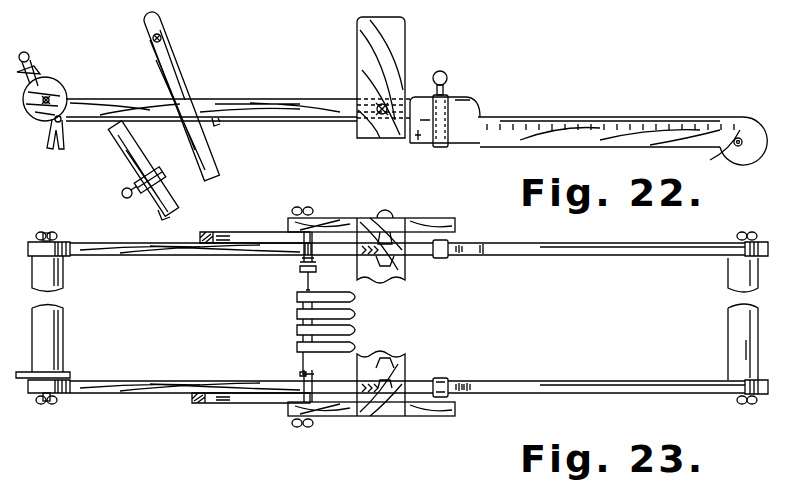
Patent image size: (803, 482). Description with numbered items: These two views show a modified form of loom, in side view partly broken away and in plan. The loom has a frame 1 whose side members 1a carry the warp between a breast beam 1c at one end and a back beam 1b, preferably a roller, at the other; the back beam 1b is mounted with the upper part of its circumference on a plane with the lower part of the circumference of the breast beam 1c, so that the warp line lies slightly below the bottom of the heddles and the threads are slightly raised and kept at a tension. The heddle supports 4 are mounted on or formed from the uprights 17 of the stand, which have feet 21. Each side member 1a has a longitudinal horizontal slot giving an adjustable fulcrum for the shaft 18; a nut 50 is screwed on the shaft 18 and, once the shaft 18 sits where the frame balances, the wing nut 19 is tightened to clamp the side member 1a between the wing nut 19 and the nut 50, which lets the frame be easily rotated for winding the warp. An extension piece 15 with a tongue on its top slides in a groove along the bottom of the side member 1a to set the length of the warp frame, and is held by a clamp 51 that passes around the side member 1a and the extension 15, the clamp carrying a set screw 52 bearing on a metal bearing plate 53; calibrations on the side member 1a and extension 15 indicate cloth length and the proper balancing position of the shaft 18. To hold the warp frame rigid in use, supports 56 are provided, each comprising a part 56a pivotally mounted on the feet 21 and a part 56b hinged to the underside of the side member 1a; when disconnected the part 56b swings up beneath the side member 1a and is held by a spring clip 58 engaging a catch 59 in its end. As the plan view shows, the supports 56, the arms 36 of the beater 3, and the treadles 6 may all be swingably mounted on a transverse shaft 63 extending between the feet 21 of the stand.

In FIG. 22, the frame 1 is at (247, 98).
In FIG. 22, the side member 1a is at (486, 112).
In FIG. 23, the side member 1a is at (472, 244).
In FIG. 23, the back beam 1b is at (732, 342).
In FIG. 22, the breast beam 1c is at (60, 88).
In FIG. 22, the beater 3 is at (160, 25).
In FIG. 22, the heddle support 4 is at (407, 56).
In FIG. 23, the heddle support 4 is at (404, 220).
In FIG. 23, the treadle 6 is at (356, 344).
In FIG. 22, the extension piece 15 is at (606, 128).
In FIG. 23, the extension piece 15 is at (596, 256).
In FIG. 22, the upright 17 is at (365, 136).
In FIG. 22, the shaft 18 is at (360, 98).
In FIG. 23, the shaft 18 is at (386, 216).
In FIG. 22, the wing nut 19 is at (384, 136).
In FIG. 23, the wing nut 19 is at (388, 350).
In FIG. 23, the foot 21 is at (324, 218).
In FIG. 22, the beater arm 36 is at (172, 62).
In FIG. 23, the beater arm 36 is at (254, 232).
In FIG. 23, the nut 50 is at (375, 240).
In FIG. 22, the clamp 51 is at (448, 96).
In FIG. 23, the clamp 51 is at (448, 256).
In FIG. 22, the set screw 52 is at (444, 72).
In FIG. 23, the set screw 52 is at (446, 380).
In FIG. 22, the metal bearing plate 53 is at (458, 97).
In FIG. 23, the metal bearing plate 53 is at (470, 392).
In FIG. 22, the support 56 is at (130, 200).
In FIG. 22, the support part 56a is at (168, 198).
In FIG. 23, the support part 56a is at (318, 248).
In FIG. 22, the support part 56b is at (116, 158).
In FIG. 22, the spring clip 58 is at (216, 122).
In FIG. 22, the catch 59 is at (162, 220).
In FIG. 23, the transverse shaft 63 is at (302, 270).